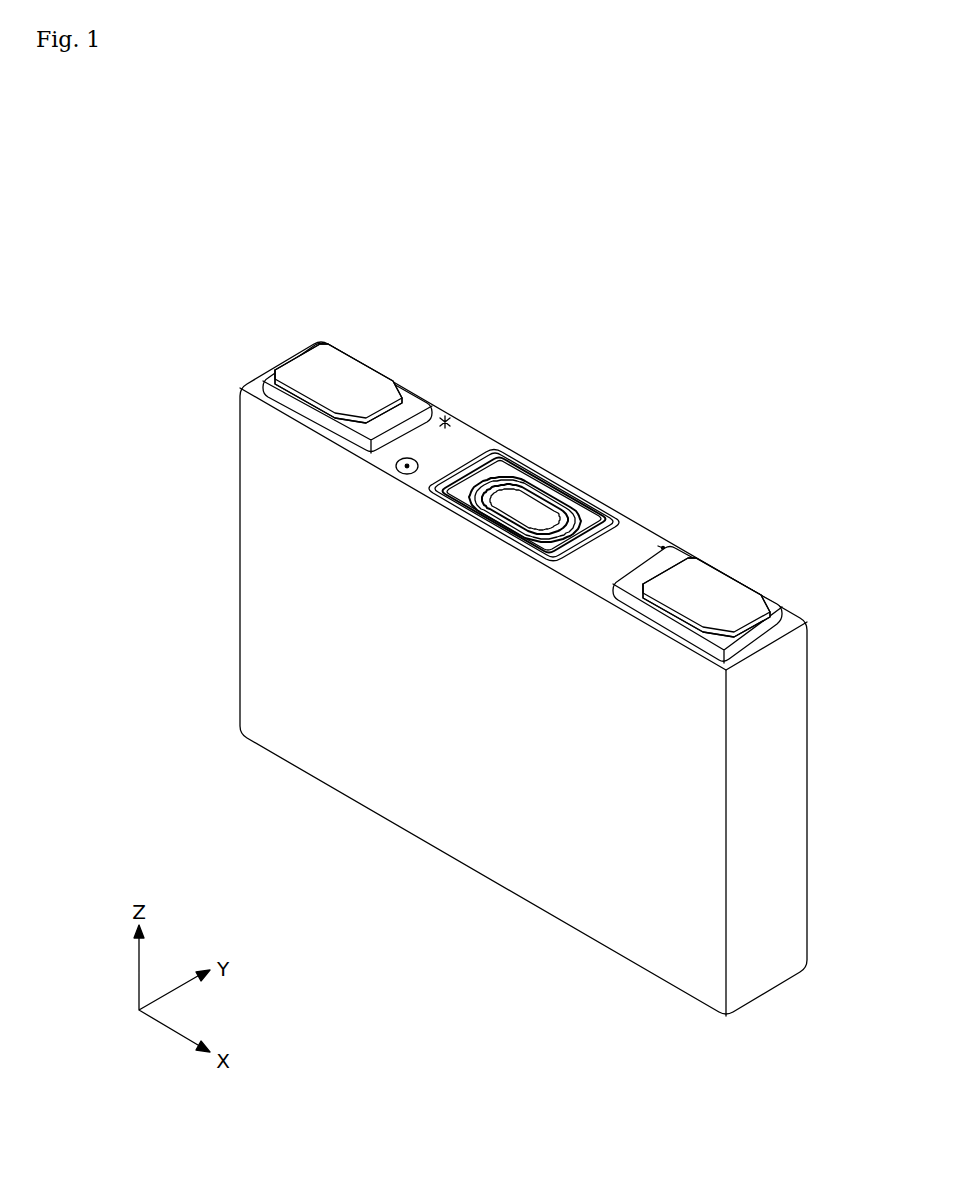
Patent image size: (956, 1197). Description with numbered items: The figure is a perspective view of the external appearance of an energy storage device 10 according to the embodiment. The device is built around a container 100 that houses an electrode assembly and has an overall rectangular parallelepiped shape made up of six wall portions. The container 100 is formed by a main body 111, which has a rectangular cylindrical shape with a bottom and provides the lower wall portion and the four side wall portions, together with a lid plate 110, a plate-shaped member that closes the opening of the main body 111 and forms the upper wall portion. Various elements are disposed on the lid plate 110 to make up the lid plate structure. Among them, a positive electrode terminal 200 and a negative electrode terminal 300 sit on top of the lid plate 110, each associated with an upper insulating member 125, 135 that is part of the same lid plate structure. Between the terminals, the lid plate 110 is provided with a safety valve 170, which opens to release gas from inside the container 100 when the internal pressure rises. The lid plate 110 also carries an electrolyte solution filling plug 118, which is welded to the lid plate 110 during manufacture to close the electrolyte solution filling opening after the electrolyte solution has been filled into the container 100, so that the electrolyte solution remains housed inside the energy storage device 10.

The energy storage device 10 is at (720, 327).
The container 100 is at (150, 458).
The lid plate 110 is at (407, 482).
The main body 111 is at (266, 538).
The electrolyte solution filling plug 118 is at (414, 460).
The upper insulating member 125 is at (407, 408).
The upper insulating member 135 is at (672, 552).
The safety valve 170 is at (527, 512).
The positive electrode terminal 200 is at (345, 380).
The negative electrode terminal 300 is at (722, 597).